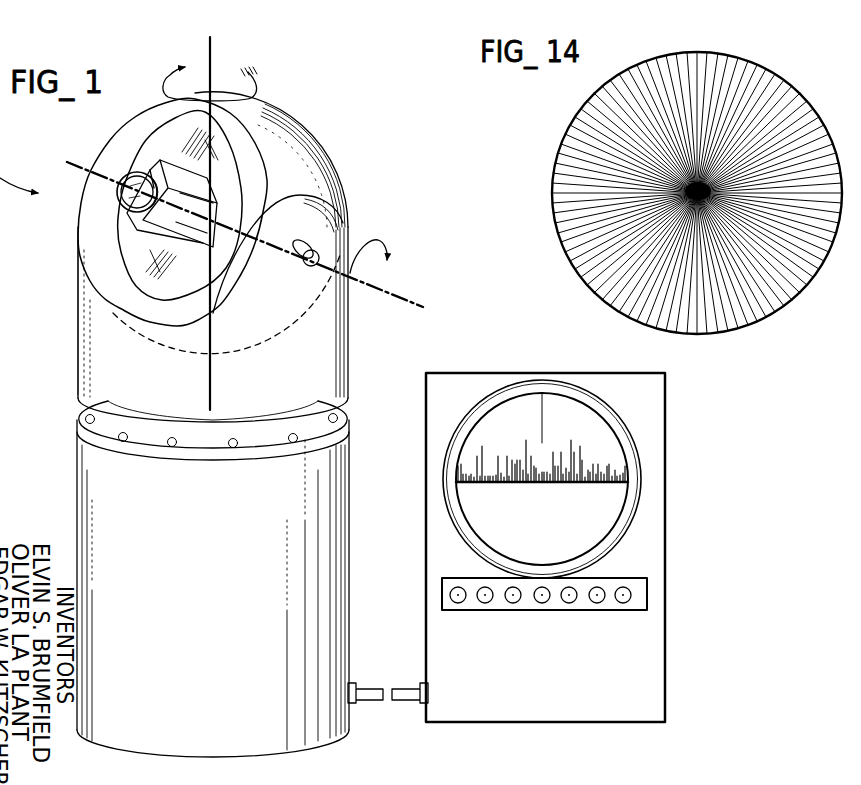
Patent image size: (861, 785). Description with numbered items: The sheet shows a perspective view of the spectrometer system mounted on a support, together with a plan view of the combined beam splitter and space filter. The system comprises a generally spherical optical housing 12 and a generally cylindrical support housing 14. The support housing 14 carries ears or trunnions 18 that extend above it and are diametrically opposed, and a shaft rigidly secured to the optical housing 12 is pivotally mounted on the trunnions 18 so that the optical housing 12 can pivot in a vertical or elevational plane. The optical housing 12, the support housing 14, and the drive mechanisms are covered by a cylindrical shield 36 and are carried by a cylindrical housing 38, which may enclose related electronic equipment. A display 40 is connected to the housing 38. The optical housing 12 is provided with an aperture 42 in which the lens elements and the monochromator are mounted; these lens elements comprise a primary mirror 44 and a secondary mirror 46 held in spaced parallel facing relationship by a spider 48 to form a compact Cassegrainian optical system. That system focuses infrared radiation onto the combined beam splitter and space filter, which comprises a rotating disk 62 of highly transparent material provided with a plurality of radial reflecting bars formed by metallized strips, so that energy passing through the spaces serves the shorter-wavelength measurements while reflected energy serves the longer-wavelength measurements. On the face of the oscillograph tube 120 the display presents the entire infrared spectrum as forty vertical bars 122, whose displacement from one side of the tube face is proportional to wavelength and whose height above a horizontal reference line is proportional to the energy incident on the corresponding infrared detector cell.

In FIG. 1, the optical housing 12 is at (288, 110).
In FIG. 1, the support housing 14 is at (348, 340).
In FIG. 1, the trunnions 18 is at (327, 213).
In FIG. 1, the cylindrical shield 36 is at (75, 332).
In FIG. 1, the cylindrical housing 38 is at (221, 563).
In FIG. 1, the display 40 is at (665, 520).
In FIG. 1, the aperture 42 is at (123, 140).
In FIG. 1, the primary mirror 44 is at (170, 147).
In FIG. 1, the secondary mirror 46 is at (116, 192).
In FIG. 1, the spider 48 is at (172, 225).
In FIG. 1, the oscillograph tube 120 is at (622, 432).
In FIG. 1, the vertical bars 122 is at (620, 472).
In FIG. 14, the disk 62 is at (787, 80).